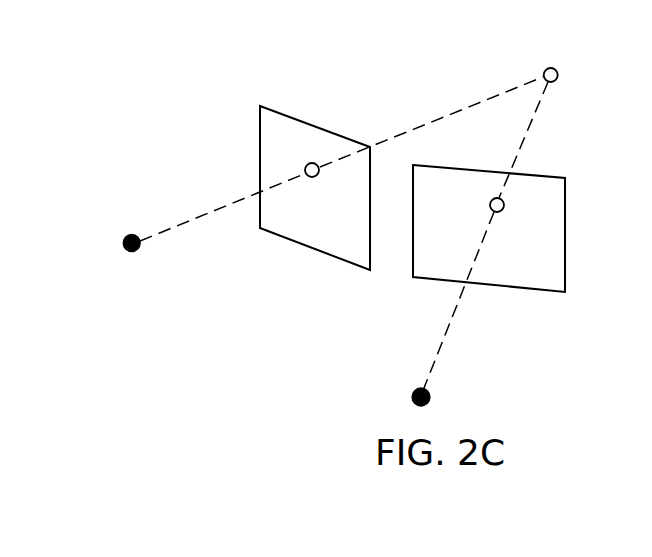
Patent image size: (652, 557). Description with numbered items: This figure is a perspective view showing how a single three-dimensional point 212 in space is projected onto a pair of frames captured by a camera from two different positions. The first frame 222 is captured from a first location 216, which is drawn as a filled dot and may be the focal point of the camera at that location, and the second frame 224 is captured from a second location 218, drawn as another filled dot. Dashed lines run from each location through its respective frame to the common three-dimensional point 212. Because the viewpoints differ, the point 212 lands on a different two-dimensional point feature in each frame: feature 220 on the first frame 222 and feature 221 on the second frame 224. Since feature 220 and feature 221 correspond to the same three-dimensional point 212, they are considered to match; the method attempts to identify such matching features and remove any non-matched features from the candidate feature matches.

The 3D point 212 is at (550, 67).
The first location 216 is at (132, 233).
The second location 218 is at (422, 390).
The 2D point feature 220 is at (312, 178).
The 2D point feature 221 is at (497, 213).
The first frame 222 is at (260, 138).
The second frame 224 is at (553, 178).